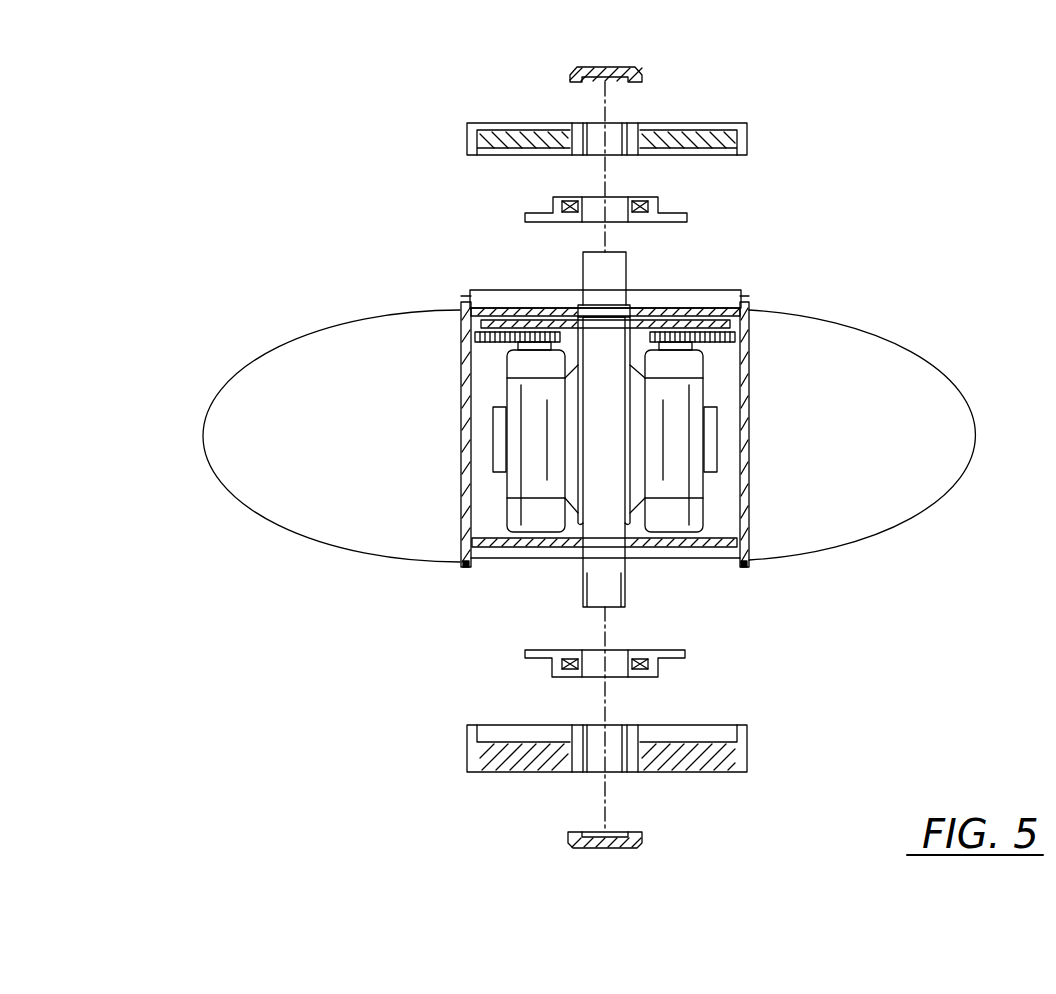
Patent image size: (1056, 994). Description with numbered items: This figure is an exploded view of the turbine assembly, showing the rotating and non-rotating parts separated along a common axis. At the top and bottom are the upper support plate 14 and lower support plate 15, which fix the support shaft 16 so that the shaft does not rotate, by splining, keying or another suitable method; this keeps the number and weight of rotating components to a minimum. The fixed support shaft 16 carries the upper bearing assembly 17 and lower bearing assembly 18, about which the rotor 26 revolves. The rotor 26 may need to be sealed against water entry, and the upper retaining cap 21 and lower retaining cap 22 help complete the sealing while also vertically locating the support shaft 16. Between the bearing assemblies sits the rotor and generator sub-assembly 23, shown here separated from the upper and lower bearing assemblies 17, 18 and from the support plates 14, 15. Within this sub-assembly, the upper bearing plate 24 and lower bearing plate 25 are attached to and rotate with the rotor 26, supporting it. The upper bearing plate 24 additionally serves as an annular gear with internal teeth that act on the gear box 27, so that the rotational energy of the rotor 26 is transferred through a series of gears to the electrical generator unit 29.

The upper support plate 14 is at (498, 125).
The lower support plate 15 is at (470, 728).
The support shaft 16 is at (595, 277).
The upper bearing assembly 17 is at (687, 214).
The lower bearing assembly 18 is at (686, 648).
The upper retaining cap 21 is at (640, 70).
The lower retaining cap 22 is at (632, 832).
The rotor and generator sub-assembly 23 is at (766, 566).
The upper bearing plate 24 is at (667, 307).
The lower bearing plate 25 is at (522, 548).
The rotor 26 is at (225, 387).
The gear box 27 is at (491, 356).
The electrical generator unit 29 is at (730, 401).